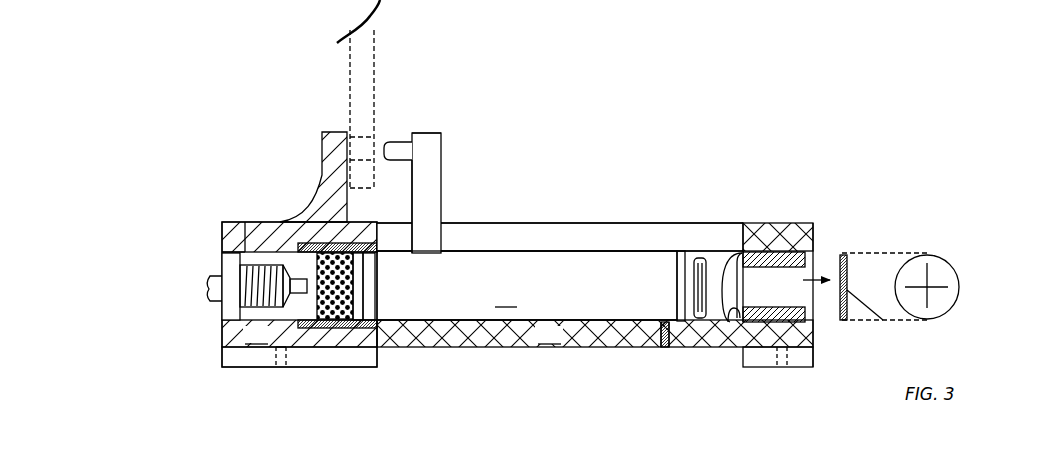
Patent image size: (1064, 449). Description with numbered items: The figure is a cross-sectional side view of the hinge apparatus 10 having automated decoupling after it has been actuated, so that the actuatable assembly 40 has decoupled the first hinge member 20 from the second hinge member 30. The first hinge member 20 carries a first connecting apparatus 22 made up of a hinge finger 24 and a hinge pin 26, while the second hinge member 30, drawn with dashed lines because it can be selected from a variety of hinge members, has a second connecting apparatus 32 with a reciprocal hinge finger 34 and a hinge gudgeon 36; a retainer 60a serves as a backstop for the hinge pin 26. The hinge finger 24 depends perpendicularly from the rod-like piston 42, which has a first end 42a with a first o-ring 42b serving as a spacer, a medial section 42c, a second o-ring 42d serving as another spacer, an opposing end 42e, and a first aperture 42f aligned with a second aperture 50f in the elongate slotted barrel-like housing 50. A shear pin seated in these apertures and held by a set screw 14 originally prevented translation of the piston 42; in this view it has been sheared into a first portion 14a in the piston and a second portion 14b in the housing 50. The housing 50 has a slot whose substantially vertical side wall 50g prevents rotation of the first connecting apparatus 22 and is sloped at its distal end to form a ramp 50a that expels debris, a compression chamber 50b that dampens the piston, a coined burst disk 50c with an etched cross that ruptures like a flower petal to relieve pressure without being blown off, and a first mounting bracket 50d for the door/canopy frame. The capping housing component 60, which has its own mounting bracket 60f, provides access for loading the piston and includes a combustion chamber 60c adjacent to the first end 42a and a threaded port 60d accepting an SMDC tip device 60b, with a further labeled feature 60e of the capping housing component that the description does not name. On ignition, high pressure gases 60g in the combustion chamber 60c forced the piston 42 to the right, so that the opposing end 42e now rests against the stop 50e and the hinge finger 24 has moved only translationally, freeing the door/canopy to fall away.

The hinge apparatus 10 is at (703, 134).
The set screw 14 is at (667, 346).
The first portion of shear pin 14a is at (703, 260).
The second portion of shear pin 14b is at (660, 338).
The first hinge member 20 is at (469, 108).
The first connecting apparatus 22 is at (441, 134).
The hinge finger 24 is at (427, 178).
The hinge pin 26 is at (400, 147).
The second hinge member 30 is at (243, 45).
The second connecting apparatus 32 is at (285, 90).
The reciprocal hinge finger 34 is at (360, 72).
The hinge gudgeon 36 is at (362, 148).
The actuatable assembly 40 is at (508, 186).
The piston 42 is at (527, 285).
The first end 42a is at (352, 282).
The first o-ring 42b is at (370, 283).
The medial section 42c is at (480, 280).
The second o-ring 42d is at (677, 284).
The opposing end 42e is at (818, 223).
The first aperture 42f is at (700, 277).
The elongate slotted barrel-like housing 50 is at (595, 299).
The stop 50a is at (743, 228).
The compression chamber 50b is at (790, 277).
The coined burst disk 50c is at (930, 285).
The first mounting bracket 50d is at (797, 358).
The stop 50e is at (742, 303).
The second aperture 50f is at (659, 348).
The slot side wall 50g is at (532, 235).
The capping housing component 60 is at (299, 294).
The retainer 60a is at (327, 153).
The SMDC tip device 60b is at (255, 278).
The combustion chamber 60c is at (312, 282).
The threaded port 60d is at (260, 257).
The screw tip 60e is at (312, 282).
The mounting bracket 60f is at (263, 357).
The high pressure gases 60g is at (330, 307).